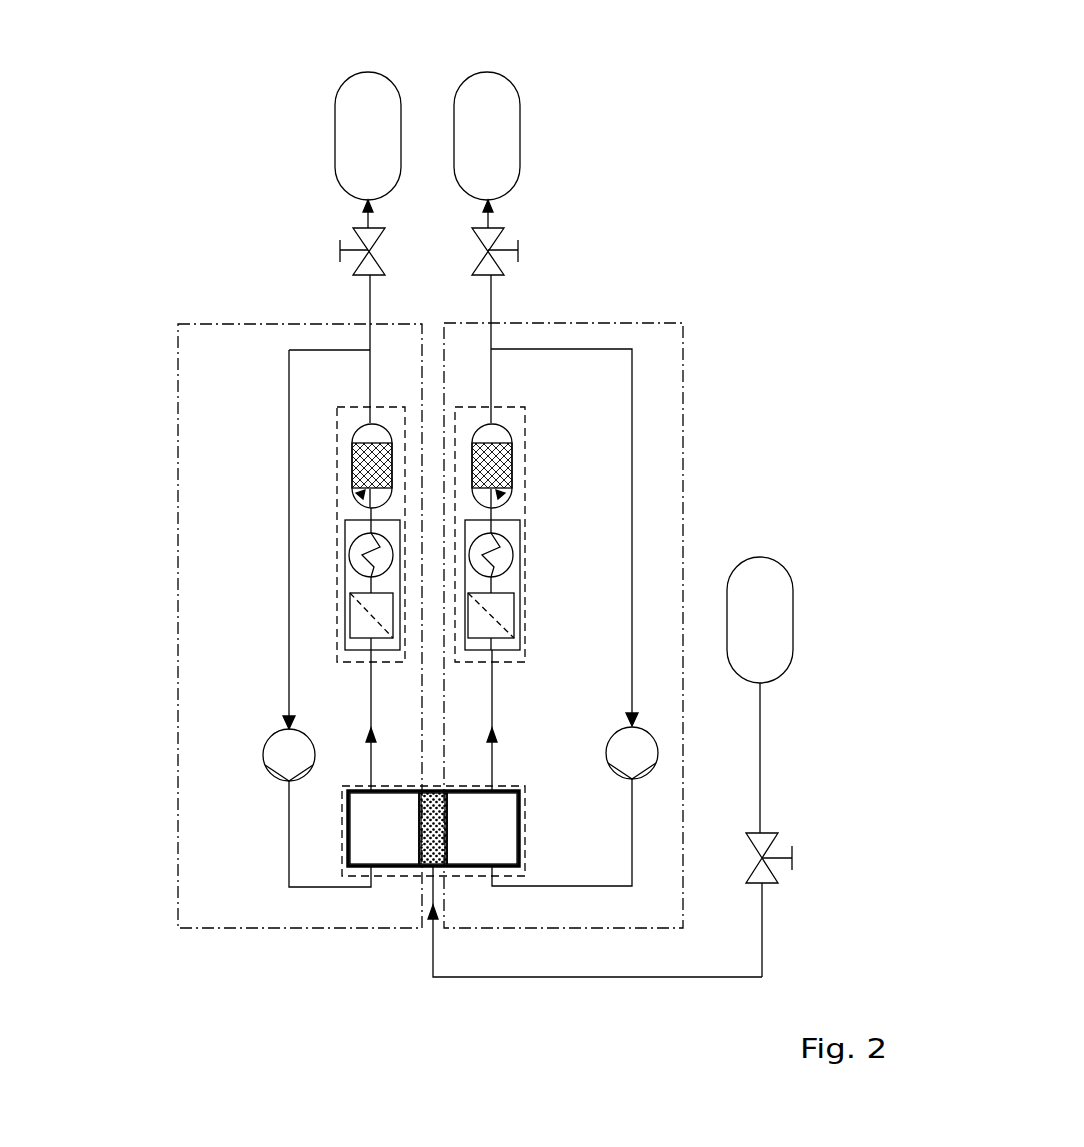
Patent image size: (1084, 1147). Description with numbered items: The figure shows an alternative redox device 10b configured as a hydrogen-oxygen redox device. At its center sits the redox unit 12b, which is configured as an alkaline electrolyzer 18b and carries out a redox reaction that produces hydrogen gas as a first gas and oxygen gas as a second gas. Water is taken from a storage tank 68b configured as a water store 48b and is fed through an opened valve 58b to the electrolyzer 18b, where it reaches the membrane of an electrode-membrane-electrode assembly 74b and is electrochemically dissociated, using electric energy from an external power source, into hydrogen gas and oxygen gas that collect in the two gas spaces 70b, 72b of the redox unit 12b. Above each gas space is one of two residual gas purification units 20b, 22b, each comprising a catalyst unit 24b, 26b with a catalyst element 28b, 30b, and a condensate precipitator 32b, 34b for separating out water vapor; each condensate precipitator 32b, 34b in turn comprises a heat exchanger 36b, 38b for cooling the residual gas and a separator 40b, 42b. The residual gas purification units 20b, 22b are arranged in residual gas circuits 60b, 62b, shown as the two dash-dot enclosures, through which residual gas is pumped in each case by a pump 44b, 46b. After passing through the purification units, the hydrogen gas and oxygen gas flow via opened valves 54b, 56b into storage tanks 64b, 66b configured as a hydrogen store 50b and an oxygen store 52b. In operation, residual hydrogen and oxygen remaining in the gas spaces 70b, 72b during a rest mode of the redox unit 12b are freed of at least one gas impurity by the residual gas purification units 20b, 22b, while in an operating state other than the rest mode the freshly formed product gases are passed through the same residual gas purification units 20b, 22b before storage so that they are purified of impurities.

The redox device 10b is at (162, 354).
The redox unit 12b is at (472, 883).
The alkaline electrolyzer 18b is at (342, 826).
The residual gas purification unit 20b is at (337, 447).
The residual gas purification unit 22b is at (525, 432).
The catalyst unit 24b is at (357, 508).
The catalyst unit 26b is at (510, 500).
The catalyst element 28b is at (352, 486).
The catalyst element 30b is at (512, 482).
The condensate precipitator 32b is at (345, 575).
The condensate precipitator 34b is at (520, 583).
The heat exchanger 36b is at (349, 552).
The heat exchanger 38b is at (505, 558).
The separator 40b is at (343, 630).
The separator 42b is at (503, 615).
The pump 44b is at (282, 743).
The pump 46b is at (628, 743).
The water store 48b is at (781, 665).
The storage tank 68b is at (753, 582).
The hydrogen store 50b is at (343, 118).
The storage tank 64b is at (365, 98).
The oxygen store 52b is at (512, 118).
The storage tank 66b is at (487, 98).
The valve 54b is at (368, 250).
The valve 56b is at (488, 250).
The valve 58b is at (762, 858).
The residual gas circuit 60b is at (205, 324).
The residual gas circuit 62b is at (682, 362).
The gas space 70b is at (385, 833).
The gas space 72b is at (473, 833).
The electrode-membrane-electrode assembly 74b is at (432, 840).